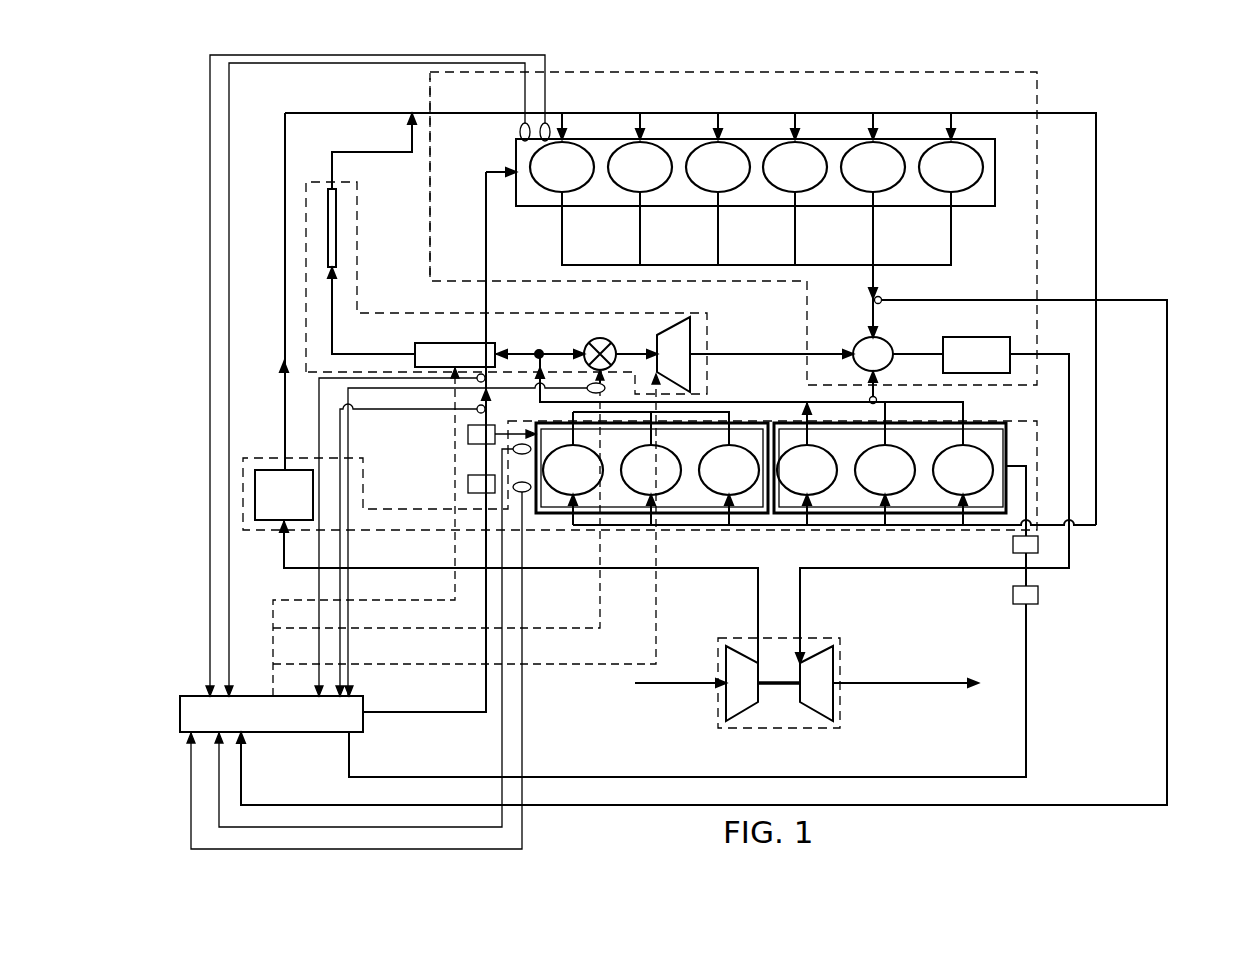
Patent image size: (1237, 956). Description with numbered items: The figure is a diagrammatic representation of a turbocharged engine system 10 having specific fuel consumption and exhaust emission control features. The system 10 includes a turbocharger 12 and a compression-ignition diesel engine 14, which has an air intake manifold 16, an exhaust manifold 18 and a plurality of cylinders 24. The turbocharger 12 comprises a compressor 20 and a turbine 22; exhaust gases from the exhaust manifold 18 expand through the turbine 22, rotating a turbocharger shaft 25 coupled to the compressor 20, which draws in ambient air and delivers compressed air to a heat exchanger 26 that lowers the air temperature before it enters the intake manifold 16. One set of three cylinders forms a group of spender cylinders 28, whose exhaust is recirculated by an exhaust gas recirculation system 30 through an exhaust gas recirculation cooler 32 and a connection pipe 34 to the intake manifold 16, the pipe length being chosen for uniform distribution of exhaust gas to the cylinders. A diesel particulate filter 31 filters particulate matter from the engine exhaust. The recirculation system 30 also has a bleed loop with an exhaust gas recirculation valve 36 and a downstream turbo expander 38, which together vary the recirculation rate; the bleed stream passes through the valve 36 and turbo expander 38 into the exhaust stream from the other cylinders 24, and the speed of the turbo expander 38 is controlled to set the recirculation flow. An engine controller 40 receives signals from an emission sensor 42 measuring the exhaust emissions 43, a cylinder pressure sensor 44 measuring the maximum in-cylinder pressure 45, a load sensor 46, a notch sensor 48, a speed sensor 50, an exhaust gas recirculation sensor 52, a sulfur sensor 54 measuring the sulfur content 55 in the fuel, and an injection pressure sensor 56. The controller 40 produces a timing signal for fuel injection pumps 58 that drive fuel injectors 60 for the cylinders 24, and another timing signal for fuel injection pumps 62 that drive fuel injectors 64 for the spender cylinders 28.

The turbocharged engine system 10 is at (1102, 831).
The turbocharger 12 is at (838, 638).
The diesel engine 14 is at (1040, 228).
The air intake manifold 16 is at (470, 113).
The exhaust manifold 18 is at (877, 350).
The compressor 20 is at (732, 697).
The turbine 22 is at (827, 700).
The cylinders 24 is at (787, 167).
The turbocharger shaft 25 is at (773, 687).
The heat exchanger 26 is at (298, 506).
The group of spender cylinders 28 is at (1008, 442).
The exhaust gas recirculation system 30 is at (314, 182).
The diesel particulate filter 31 is at (960, 337).
The exhaust gas recirculation cooler 32 is at (433, 346).
The connection pipe 34 is at (334, 220).
The exhaust gas recirculation valve 36 is at (596, 343).
The turbo expander 38 is at (682, 338).
The engine controller 40 is at (187, 696).
The emission sensor 42 is at (882, 300).
The exhaust emissions 43 is at (868, 290).
The cylinder pressure sensor 44 is at (513, 450).
The maximum in-cylinder pressure 45 is at (742, 481).
The load sensor 46 is at (524, 492).
The notch sensor 48 is at (528, 124).
The speed sensor 50 is at (548, 124).
The exhaust gas recirculation sensor 52 is at (605, 389).
The sulfur sensor 54 is at (480, 374).
The sulfur content 55 is at (493, 412).
The injection pressure sensor 56 is at (477, 410).
The fuel injection pumps 58 is at (470, 484).
The fuel injectors 60 is at (468, 435).
The fuel injection pumps 62 is at (1038, 596).
The fuel injectors 64 is at (1038, 546).